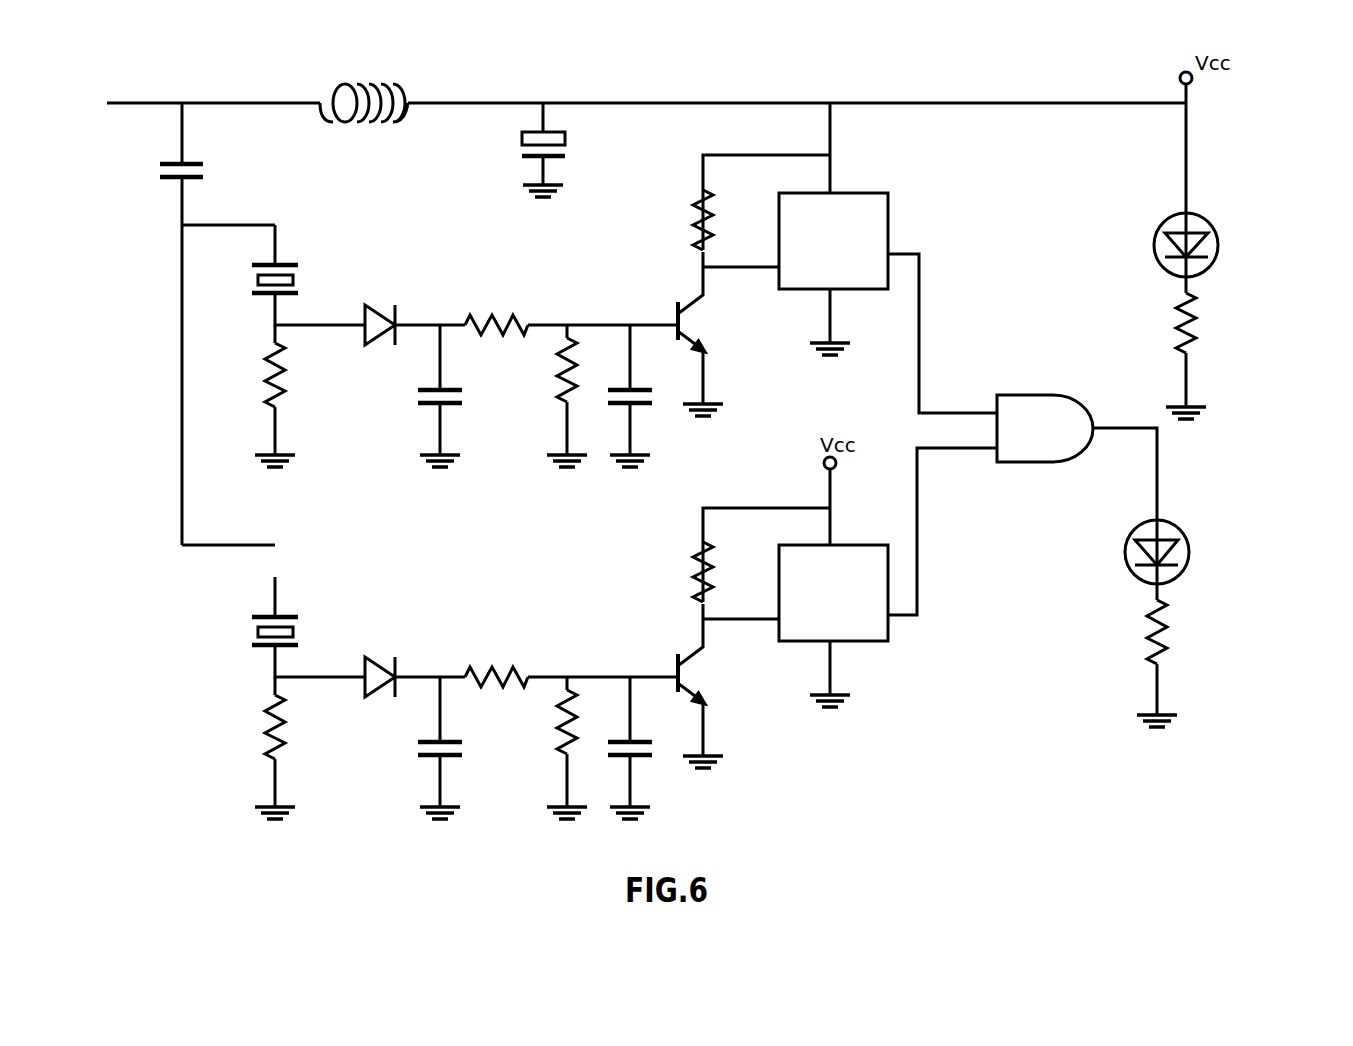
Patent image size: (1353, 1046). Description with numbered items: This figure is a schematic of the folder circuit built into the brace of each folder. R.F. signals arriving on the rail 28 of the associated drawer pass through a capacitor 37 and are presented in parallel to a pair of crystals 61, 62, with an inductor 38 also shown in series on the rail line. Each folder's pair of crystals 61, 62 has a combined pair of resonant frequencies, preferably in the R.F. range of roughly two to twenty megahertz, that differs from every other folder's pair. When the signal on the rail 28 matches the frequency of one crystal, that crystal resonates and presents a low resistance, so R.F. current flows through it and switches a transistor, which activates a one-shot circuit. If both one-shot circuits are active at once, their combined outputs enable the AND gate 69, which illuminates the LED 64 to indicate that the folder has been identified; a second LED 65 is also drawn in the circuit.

The rail 28 is at (646, 88).
The capacitor 37 is at (200, 175).
The inductor 38 is at (367, 102).
The crystal 61 is at (307, 278).
The crystal 62 is at (303, 630).
The LED 64 is at (1183, 537).
The LED B 65 is at (1217, 242).
The AND gate 69 is at (1027, 407).